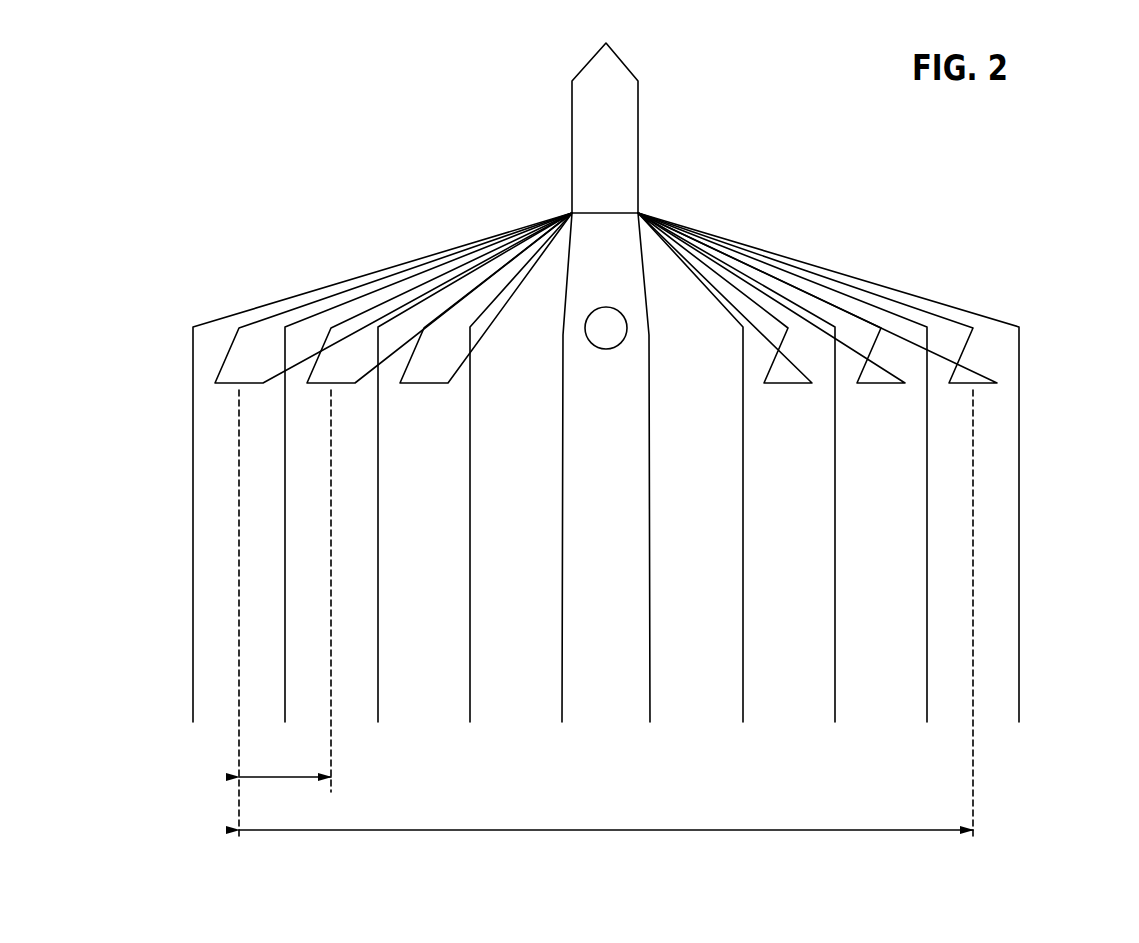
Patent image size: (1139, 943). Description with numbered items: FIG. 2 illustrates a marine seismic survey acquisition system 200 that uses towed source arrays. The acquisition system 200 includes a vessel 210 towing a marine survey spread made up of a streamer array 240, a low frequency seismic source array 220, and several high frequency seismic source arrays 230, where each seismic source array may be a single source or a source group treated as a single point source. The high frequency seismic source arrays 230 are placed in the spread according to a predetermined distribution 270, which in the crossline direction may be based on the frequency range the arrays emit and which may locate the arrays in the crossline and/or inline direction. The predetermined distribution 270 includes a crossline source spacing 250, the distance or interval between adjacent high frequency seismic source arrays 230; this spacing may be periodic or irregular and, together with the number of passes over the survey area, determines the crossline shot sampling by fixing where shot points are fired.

The marine seismic survey acquisition system 200 is at (367, 98).
The vessel 210 is at (587, 66).
The low frequency seismic source array 220 is at (592, 304).
The high frequency seismic source arrays 230 is at (230, 342).
The streamer array 240 is at (193, 497).
The crossline source spacing 250 is at (285, 780).
The predetermined distribution 270 is at (607, 830).